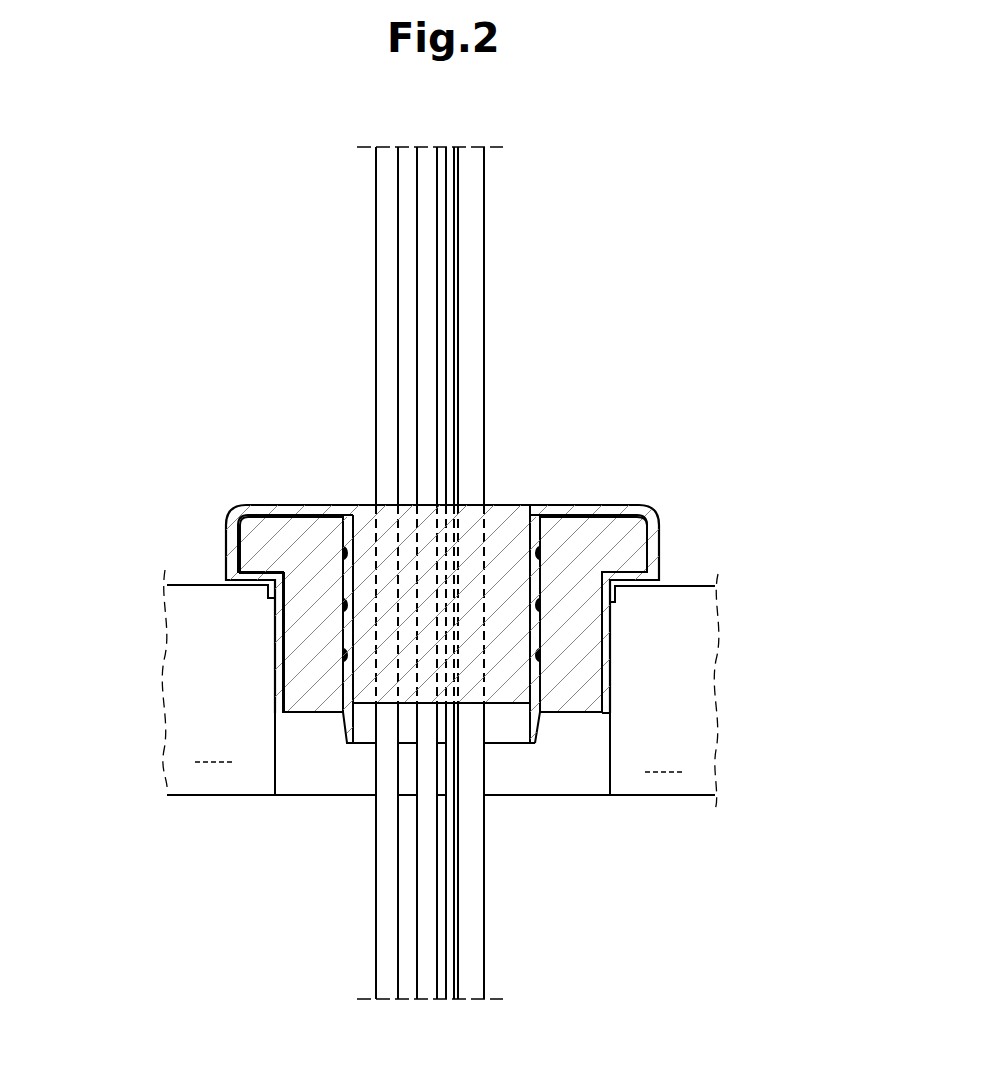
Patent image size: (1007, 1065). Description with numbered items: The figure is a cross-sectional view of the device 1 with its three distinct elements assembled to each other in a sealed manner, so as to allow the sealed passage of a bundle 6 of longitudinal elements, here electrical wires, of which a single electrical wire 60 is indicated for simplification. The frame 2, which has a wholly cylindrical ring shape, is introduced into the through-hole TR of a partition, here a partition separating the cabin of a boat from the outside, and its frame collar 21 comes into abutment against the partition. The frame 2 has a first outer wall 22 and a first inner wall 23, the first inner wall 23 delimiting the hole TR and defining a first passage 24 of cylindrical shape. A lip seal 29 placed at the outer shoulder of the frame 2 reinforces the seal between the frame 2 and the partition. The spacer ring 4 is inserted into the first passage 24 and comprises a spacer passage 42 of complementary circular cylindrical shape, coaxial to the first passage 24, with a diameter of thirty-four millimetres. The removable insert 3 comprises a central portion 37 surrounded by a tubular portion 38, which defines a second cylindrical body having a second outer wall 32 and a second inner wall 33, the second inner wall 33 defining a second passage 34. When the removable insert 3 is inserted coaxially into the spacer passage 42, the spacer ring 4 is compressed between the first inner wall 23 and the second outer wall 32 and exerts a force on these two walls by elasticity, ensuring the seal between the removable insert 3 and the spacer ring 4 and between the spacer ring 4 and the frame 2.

The device 1 is at (290, 238).
The frame 2 is at (613, 697).
The removable insert 3 is at (655, 508).
The spacer ring 4 is at (277, 543).
The bundle of longitudinal elements 6 is at (500, 298).
The electrical wire 60 is at (376, 368).
The frame collar 21 is at (238, 575).
The first outer wall 22 is at (607, 653).
The first inner wall 23 is at (603, 704).
The first passage 24 is at (588, 737).
The lip seal 29 is at (630, 587).
The second outer wall 32 is at (343, 677).
The second inner wall 33 is at (347, 713).
The second passage 34 is at (504, 742).
The central portion 37 is at (510, 508).
The tubular portion 38 is at (346, 630).
The spacer passage 42 is at (547, 722).
The through-hole TR is at (352, 807).